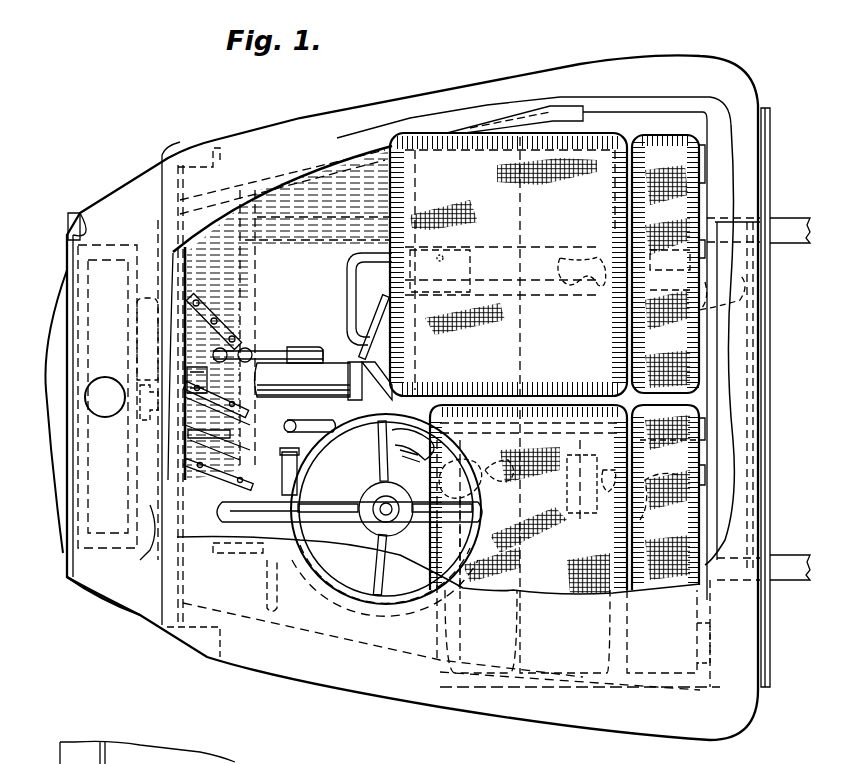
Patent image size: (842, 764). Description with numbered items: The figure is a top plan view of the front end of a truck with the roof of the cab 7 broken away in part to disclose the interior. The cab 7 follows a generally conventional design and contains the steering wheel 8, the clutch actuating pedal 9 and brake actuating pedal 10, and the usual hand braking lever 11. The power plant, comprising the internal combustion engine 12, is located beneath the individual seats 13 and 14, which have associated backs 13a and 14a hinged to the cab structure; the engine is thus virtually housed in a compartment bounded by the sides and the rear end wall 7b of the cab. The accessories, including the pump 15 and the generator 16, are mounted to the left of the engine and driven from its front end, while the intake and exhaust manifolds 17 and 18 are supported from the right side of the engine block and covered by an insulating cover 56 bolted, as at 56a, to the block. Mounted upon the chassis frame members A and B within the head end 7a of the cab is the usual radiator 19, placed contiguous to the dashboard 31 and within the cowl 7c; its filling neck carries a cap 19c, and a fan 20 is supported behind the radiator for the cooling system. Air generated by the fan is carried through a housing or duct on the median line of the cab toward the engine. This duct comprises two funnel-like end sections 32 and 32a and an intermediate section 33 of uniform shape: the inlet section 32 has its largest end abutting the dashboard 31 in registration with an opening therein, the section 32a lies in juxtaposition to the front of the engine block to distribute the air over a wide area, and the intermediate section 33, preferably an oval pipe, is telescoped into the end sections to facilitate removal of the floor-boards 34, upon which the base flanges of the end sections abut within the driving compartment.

The cab 7 is at (410, 102).
The head end of the cab 7a is at (92, 222).
The rear end wall of the cab 7b is at (763, 98).
The cowl 7c is at (132, 612).
The steering wheel 8 is at (328, 472).
The clutch actuating pedal 9 is at (290, 565).
The brake actuating pedal 10 is at (285, 462).
The hand braking lever 11 is at (262, 351).
The internal combustion engine 12 is at (738, 410).
The seat 13 is at (528, 499).
The seat back 13a is at (655, 582).
The seat 14 is at (508, 264).
The seat back 14a is at (655, 130).
The pump 15 is at (578, 510).
The generator 16 is at (486, 502).
The intake manifold 17 is at (543, 256).
The exhaust manifold 18 is at (480, 292).
The radiator 19 is at (122, 250).
The cap 19c is at (100, 378).
The fan 20 is at (150, 552).
The dashboard 31 is at (225, 762).
The inlet end section of the duct 32 is at (205, 310).
The outlet end section of the duct 32a is at (333, 340).
The intermediate section of the duct 33 is at (320, 362).
The floor-boards 34 is at (333, 272).
The insulating cover 56 is at (462, 237).
The bolts 56a is at (705, 285).
The chassis frame member A is at (780, 228).
The chassis frame member B is at (780, 560).